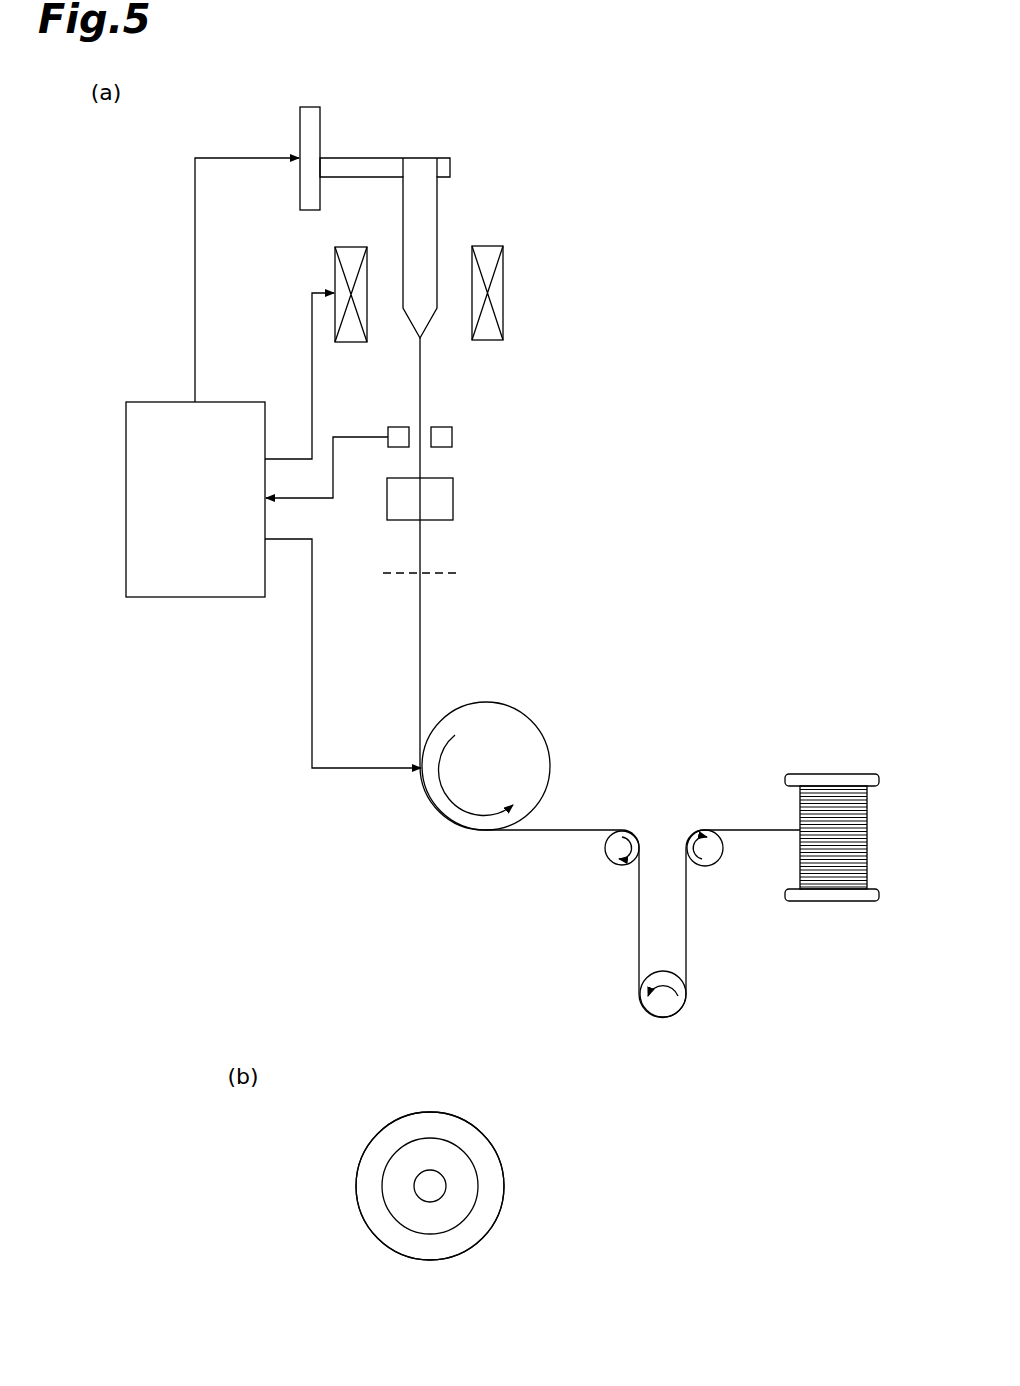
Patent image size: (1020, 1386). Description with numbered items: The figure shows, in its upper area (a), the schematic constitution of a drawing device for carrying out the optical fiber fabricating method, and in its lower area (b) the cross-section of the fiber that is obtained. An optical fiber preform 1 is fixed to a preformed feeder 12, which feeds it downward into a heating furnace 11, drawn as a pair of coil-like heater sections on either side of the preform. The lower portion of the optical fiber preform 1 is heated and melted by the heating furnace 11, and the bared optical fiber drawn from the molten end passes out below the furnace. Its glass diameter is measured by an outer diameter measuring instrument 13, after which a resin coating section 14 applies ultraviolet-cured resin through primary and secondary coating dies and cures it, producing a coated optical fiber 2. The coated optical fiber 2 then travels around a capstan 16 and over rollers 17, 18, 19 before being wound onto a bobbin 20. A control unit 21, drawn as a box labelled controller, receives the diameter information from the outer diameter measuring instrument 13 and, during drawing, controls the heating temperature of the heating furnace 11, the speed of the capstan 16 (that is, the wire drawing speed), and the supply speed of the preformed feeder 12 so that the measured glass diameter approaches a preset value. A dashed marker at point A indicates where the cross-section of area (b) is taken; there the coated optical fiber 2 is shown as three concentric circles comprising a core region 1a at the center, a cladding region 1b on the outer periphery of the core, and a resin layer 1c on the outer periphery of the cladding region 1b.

The optical fiber preform 1 is at (417, 168).
The core region 1a is at (433, 1180).
The cladding region 1b is at (467, 1183).
The resin layer 1c is at (472, 1233).
The coated optical fiber 2 is at (421, 637).
The heating furnace 11 is at (333, 277).
The preformed feeder 12 is at (298, 127).
The outer diameter measuring instrument 13 is at (453, 432).
The resin coating section 14 is at (453, 496).
The capstan 16 is at (518, 707).
The roller 17 is at (610, 863).
The roller 18 is at (660, 968).
The roller 19 is at (713, 862).
The bobbin 20 is at (838, 900).
The control unit 21 is at (198, 598).
The point A is at (433, 574).